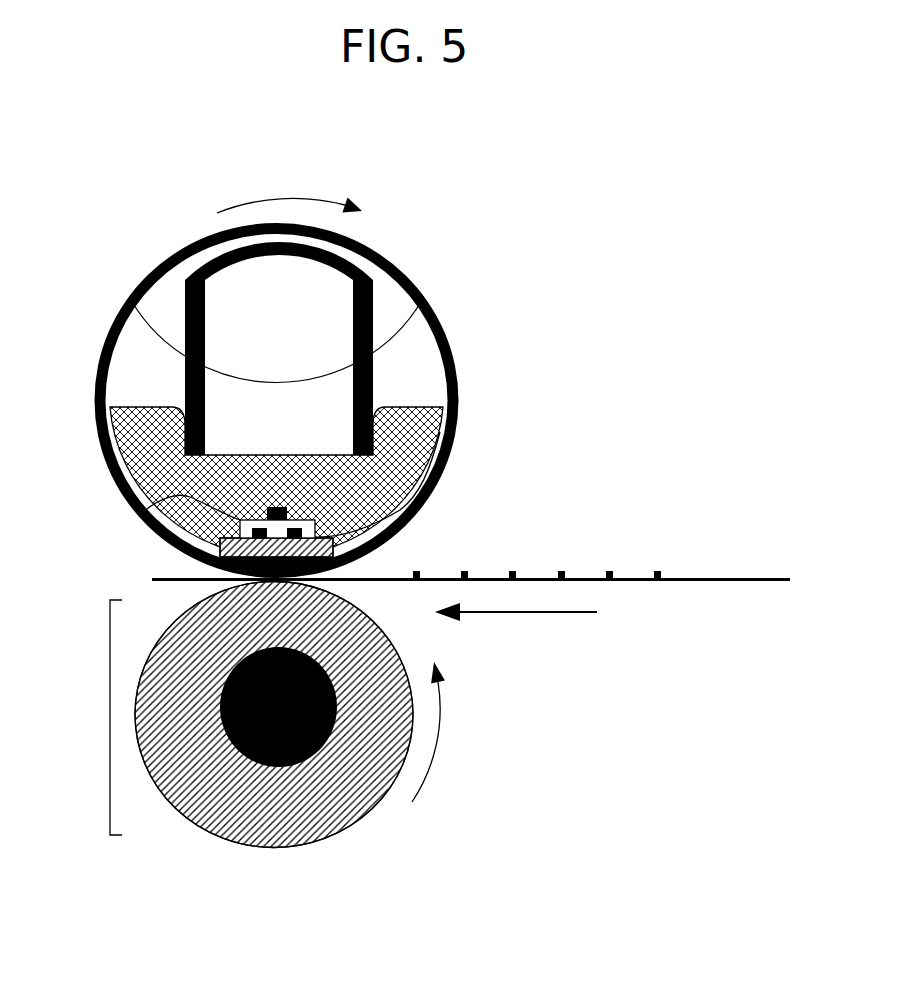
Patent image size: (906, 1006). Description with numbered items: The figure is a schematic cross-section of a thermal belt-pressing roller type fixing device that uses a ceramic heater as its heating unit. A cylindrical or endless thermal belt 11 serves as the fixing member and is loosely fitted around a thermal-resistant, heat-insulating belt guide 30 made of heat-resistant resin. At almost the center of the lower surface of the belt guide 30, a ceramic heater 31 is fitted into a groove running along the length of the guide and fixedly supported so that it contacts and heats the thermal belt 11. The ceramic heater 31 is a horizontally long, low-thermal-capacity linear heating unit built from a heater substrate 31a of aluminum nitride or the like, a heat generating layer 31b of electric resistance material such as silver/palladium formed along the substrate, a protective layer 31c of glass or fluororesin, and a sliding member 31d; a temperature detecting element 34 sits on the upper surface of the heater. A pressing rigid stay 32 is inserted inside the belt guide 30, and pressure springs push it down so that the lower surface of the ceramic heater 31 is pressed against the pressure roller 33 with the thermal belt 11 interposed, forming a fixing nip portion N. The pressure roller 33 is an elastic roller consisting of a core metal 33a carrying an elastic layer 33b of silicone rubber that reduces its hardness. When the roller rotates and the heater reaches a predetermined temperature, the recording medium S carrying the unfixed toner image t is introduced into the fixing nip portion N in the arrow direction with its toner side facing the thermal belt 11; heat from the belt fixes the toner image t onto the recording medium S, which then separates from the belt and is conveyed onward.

The thermal belt 11 is at (105, 352).
The belt guide 30 is at (118, 430).
The ceramic heater 31 is at (291, 459).
The heater substrate 31a is at (165, 543).
The heat generating layer 31b is at (452, 433).
The protective layer 31c is at (124, 500).
The sliding member 31d is at (175, 560).
The pressing rigid stay 32 is at (378, 322).
The pressure roller 33 is at (302, 715).
The core metal 33a is at (342, 707).
The elastic layer 33b is at (348, 768).
The temperature detecting element 34 is at (278, 505).
The fixing nip portion N is at (348, 582).
The recording medium S is at (637, 582).
The toner image t is at (565, 571).